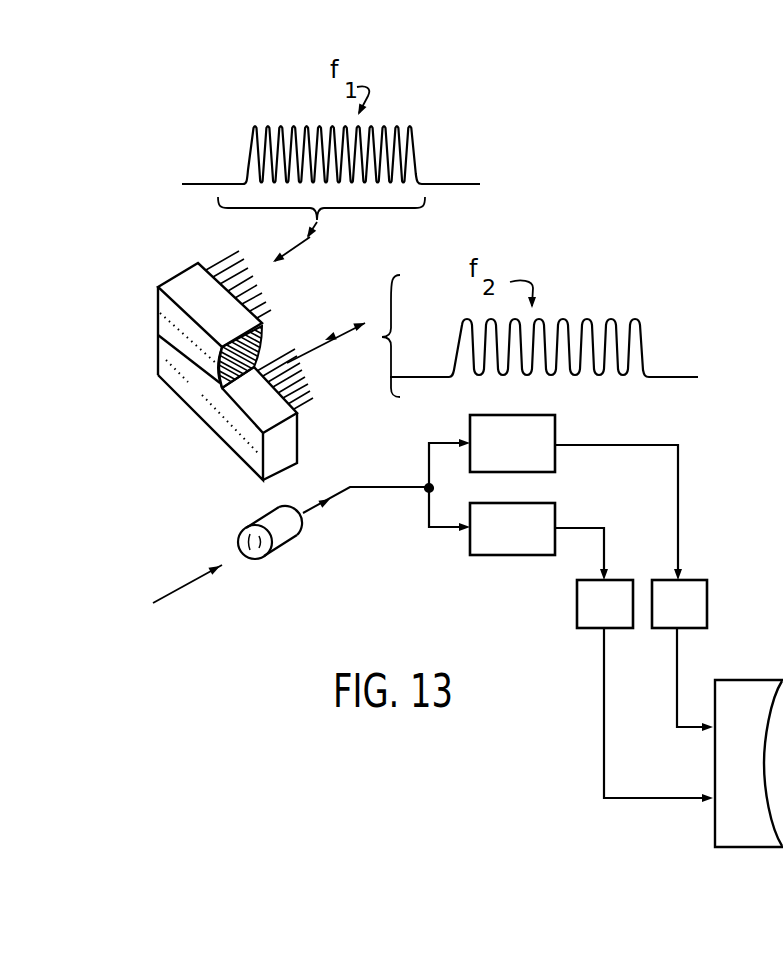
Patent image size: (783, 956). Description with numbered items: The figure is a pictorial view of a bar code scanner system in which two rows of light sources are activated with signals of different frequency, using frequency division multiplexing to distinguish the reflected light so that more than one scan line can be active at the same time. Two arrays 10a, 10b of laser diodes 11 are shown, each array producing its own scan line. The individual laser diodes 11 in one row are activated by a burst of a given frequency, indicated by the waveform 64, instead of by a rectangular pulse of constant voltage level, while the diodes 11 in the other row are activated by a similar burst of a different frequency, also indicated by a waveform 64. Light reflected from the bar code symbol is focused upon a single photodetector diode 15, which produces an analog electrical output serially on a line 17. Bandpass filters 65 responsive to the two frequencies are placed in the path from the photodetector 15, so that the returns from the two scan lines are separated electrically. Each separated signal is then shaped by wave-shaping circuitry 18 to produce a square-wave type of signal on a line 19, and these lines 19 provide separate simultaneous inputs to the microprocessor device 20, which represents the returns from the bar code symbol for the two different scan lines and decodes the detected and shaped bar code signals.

The waveform 64 is at (247, 142).
The laser diodes 11 is at (157, 307).
The array 10b is at (218, 373).
The array 10a is at (247, 452).
The photodetector diode 15 is at (283, 553).
The line 17 is at (370, 490).
The bandpass filters 65 is at (557, 433).
The wave-shaping circuitry 18 is at (692, 617).
The line 19 is at (675, 727).
The microprocessor device 20 is at (749, 730).